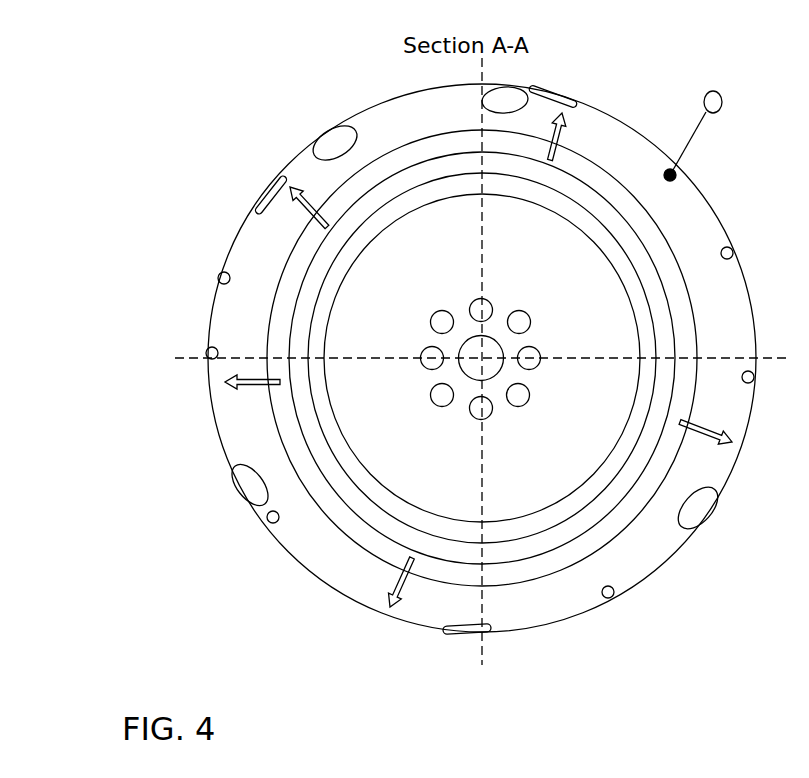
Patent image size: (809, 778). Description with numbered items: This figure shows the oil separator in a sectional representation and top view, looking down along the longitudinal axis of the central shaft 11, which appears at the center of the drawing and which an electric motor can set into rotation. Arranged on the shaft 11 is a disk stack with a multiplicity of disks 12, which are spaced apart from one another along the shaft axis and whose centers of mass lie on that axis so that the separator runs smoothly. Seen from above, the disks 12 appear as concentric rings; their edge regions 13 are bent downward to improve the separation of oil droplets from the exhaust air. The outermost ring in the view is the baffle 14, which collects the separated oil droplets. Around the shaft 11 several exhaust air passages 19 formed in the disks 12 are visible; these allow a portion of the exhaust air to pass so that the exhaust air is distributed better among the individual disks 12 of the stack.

The shaft 11 is at (488, 368).
The disks 12 is at (559, 259).
The edge regions 13 is at (387, 212).
The baffle 14 is at (722, 224).
The exhaust air passages 19 is at (442, 395).